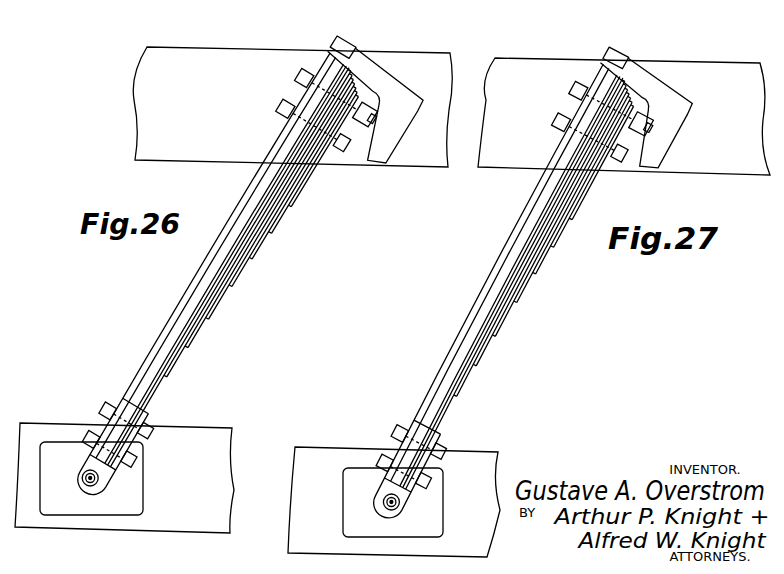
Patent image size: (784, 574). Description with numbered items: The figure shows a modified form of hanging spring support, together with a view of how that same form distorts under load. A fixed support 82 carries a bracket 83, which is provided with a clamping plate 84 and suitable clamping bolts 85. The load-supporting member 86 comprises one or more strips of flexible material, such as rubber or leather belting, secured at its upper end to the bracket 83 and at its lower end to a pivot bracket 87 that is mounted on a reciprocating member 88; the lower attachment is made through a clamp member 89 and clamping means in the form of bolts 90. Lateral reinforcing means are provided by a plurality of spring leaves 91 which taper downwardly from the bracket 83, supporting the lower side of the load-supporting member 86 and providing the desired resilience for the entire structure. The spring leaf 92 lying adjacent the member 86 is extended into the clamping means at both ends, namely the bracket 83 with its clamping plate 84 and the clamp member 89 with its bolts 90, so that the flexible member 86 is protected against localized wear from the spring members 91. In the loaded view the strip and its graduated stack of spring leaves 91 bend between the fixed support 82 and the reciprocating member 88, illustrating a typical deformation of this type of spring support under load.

In FIG. 26, the fixed support 82 is at (292, 107).
In FIG. 27, the fixed support 82 is at (624, 116).
In FIG. 26, the bracket 83 is at (381, 83).
In FIG. 27, the bracket 83 is at (651, 94).
In FIG. 26, the clamping plate 84 is at (305, 97).
In FIG. 27, the clamping plate 84 is at (561, 131).
In FIG. 26, the clamping bolts 85 is at (358, 149).
In FIG. 27, the clamping bolts 85 is at (628, 157).
In FIG. 26, the load-supporting member 86 is at (193, 305).
In FIG. 27, the load-supporting member 86 is at (475, 316).
In FIG. 26, the pivot bracket 87 is at (112, 478).
In FIG. 27, the pivot bracket 87 is at (432, 490).
In FIG. 26, the reciprocating member 88 is at (124, 478).
In FIG. 27, the reciprocating member 88 is at (394, 502).
In FIG. 26, the clamp member 89 is at (104, 428).
In FIG. 27, the clamp member 89 is at (424, 462).
In FIG. 26, the clamping bolts 90 is at (131, 458).
In FIG. 27, the clamping bolts 90 is at (389, 455).
In FIG. 26, the spring leaves 91 is at (289, 214).
In FIG. 27, the spring leaves 91 is at (523, 286).
In FIG. 26, the spring leaf adjacent the member 92 is at (147, 416).
In FIG. 27, the spring leaf adjacent the member 92 is at (435, 431).